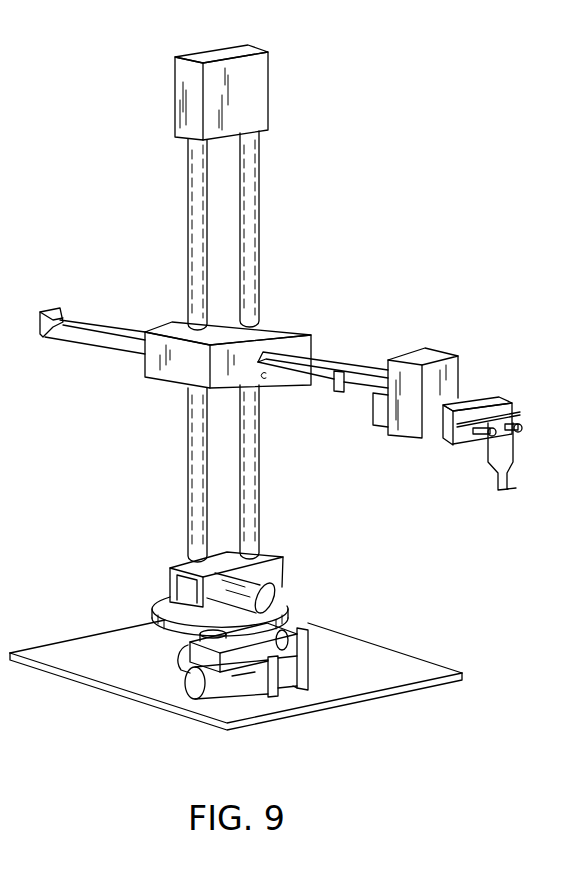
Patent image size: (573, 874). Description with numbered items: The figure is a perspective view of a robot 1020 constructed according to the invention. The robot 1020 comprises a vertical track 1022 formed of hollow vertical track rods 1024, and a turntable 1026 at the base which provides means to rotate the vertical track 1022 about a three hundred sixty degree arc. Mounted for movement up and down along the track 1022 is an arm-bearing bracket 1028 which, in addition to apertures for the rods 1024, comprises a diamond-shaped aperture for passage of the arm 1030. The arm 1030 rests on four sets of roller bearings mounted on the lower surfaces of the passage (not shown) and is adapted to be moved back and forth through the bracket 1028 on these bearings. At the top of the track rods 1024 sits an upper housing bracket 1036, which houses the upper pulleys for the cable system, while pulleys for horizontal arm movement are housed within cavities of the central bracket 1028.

The robot 1020 is at (266, 387).
The vertical track 1022 is at (226, 303).
The vertical track rods 1024 is at (195, 265).
The turntable 1026 is at (292, 602).
The arm-bearing bracket 1028 is at (177, 373).
The arm 1030 is at (334, 357).
The upper housing bracket 1036 is at (258, 114).